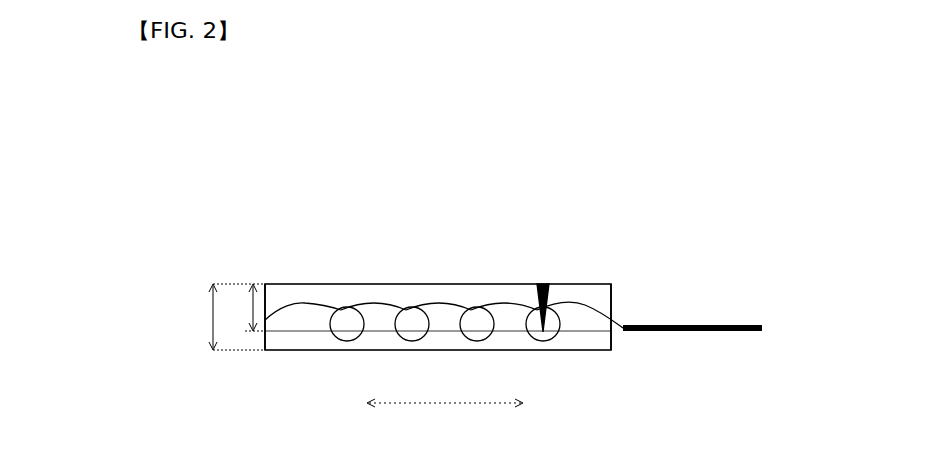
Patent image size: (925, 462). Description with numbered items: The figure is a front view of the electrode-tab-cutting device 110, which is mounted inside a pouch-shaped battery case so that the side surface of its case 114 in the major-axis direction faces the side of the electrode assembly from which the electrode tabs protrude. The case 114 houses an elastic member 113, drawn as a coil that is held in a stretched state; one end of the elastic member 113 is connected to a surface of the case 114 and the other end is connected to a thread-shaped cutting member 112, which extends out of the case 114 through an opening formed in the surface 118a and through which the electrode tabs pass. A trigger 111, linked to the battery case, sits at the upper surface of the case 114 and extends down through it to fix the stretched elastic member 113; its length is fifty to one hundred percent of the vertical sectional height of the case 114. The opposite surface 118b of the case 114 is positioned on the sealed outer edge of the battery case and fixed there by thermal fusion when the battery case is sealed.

The electrode-tab-cutting device 110 is at (188, 150).
The trigger 111 is at (543, 284).
The cutting member 112 is at (700, 332).
The elastic member 113 is at (438, 302).
The case 114 is at (318, 284).
The surface of the case 118a is at (623, 348).
The surface of the case 118b is at (247, 348).